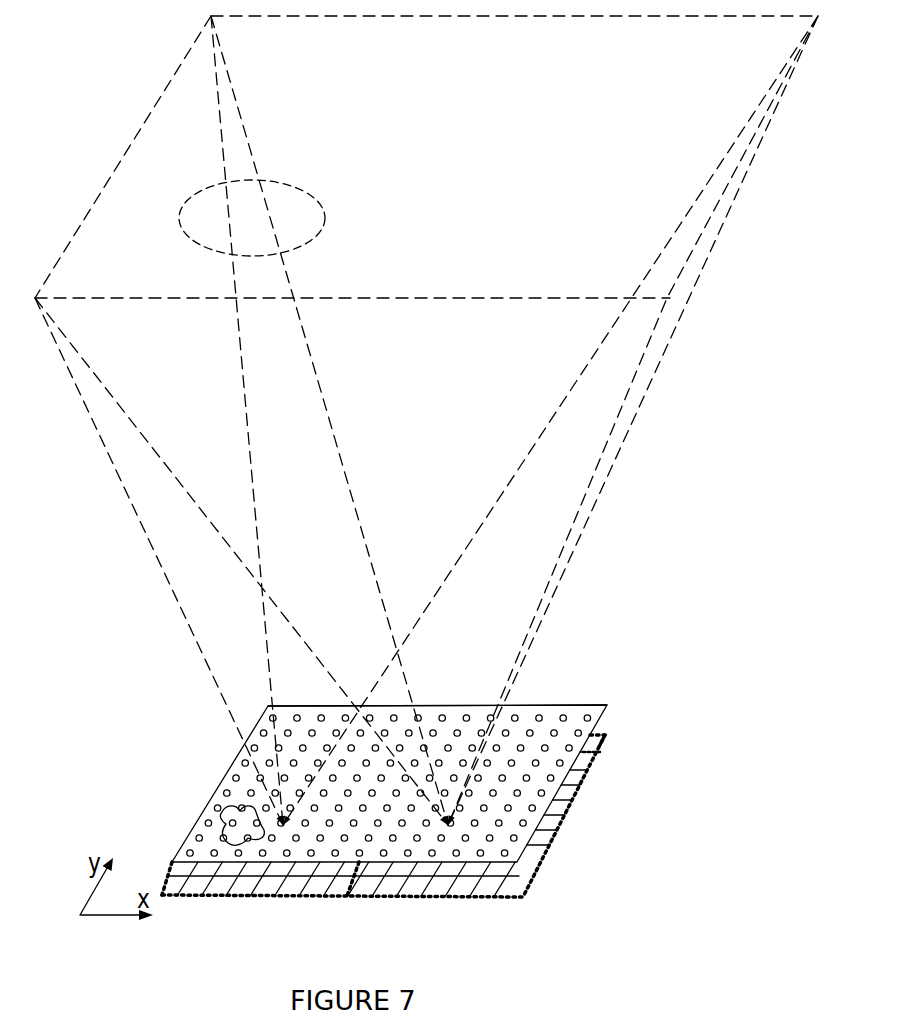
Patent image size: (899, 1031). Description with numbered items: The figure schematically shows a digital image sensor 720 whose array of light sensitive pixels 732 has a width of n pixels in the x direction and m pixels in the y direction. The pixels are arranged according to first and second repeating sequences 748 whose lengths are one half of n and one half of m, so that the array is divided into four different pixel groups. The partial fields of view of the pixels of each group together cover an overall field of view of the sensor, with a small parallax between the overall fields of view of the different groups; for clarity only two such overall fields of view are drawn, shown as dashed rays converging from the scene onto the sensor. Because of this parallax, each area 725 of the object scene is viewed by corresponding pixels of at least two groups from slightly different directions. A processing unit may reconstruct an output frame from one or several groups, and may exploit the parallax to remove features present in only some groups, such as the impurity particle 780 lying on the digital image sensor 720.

The digital image sensor 720 is at (389, 786).
The area of the object scene 725 is at (178, 218).
The array of light sensitive pixels 732 is at (580, 788).
The repeating sequence 748 is at (349, 829).
The impurity particle 780 is at (230, 824).